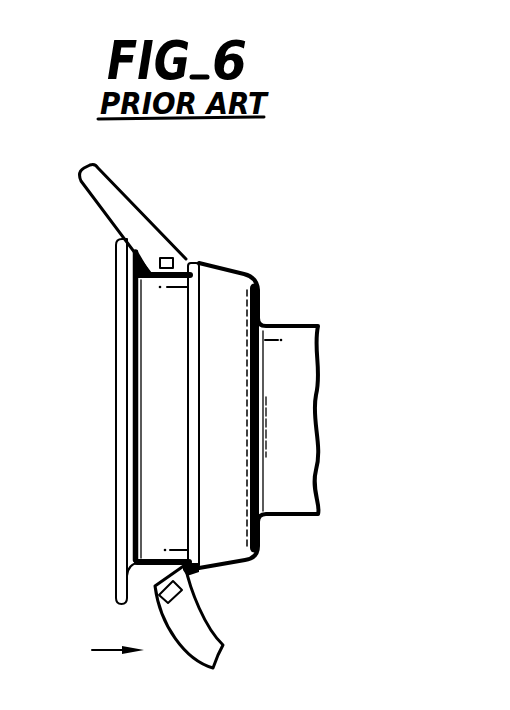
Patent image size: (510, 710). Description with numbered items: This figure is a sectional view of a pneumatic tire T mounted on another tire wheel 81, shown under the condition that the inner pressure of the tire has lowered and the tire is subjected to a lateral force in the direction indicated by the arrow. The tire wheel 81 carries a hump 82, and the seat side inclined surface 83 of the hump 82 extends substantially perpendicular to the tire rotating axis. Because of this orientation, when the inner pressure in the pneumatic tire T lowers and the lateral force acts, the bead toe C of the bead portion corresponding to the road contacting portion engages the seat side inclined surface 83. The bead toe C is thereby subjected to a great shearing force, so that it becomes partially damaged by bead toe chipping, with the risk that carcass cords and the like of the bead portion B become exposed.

The tire wheel 81 is at (262, 272).
The hump 82 is at (199, 263).
The seat side inclined surface 83 is at (187, 262).
The pneumatic tire T is at (118, 187).
The buckle B is at (184, 598).
The bead toe C is at (190, 566).